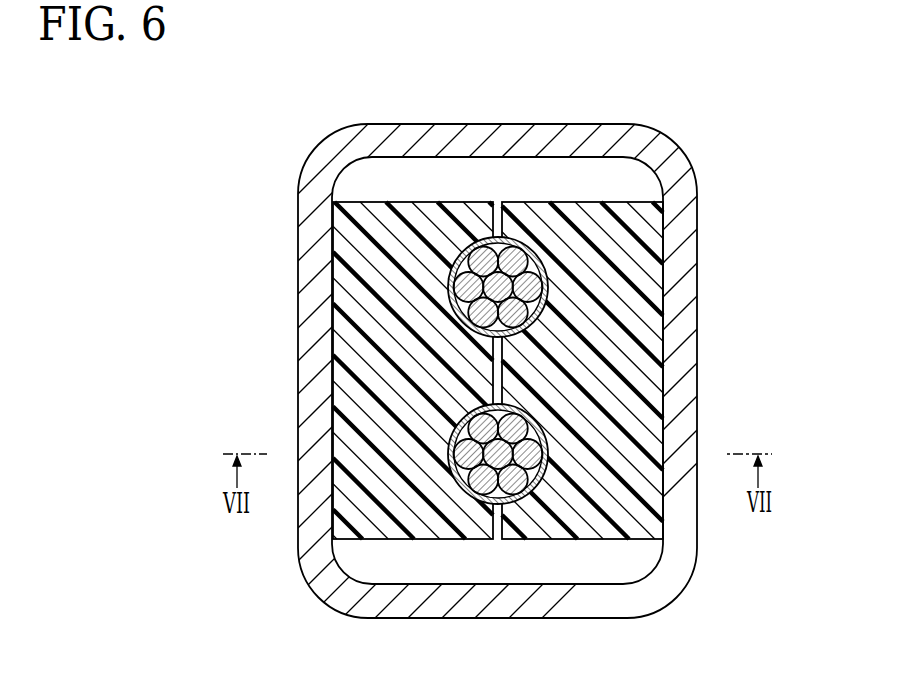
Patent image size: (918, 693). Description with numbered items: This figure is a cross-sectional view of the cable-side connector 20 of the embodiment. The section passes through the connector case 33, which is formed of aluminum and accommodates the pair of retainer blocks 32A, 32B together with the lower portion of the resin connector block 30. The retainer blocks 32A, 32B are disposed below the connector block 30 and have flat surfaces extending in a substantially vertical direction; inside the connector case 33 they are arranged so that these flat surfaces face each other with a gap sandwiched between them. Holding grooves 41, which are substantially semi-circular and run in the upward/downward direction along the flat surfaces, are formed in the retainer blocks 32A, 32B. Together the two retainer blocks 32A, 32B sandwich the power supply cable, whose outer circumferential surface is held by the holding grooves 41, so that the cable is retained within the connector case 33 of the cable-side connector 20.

The cable-side connector 20 is at (492, 335).
The connector block 30 is at (542, 271).
The retainer block 32A is at (368, 214).
The retainer block 32B is at (635, 226).
The connector case 33 is at (298, 362).
The holding groove 41 is at (458, 288).